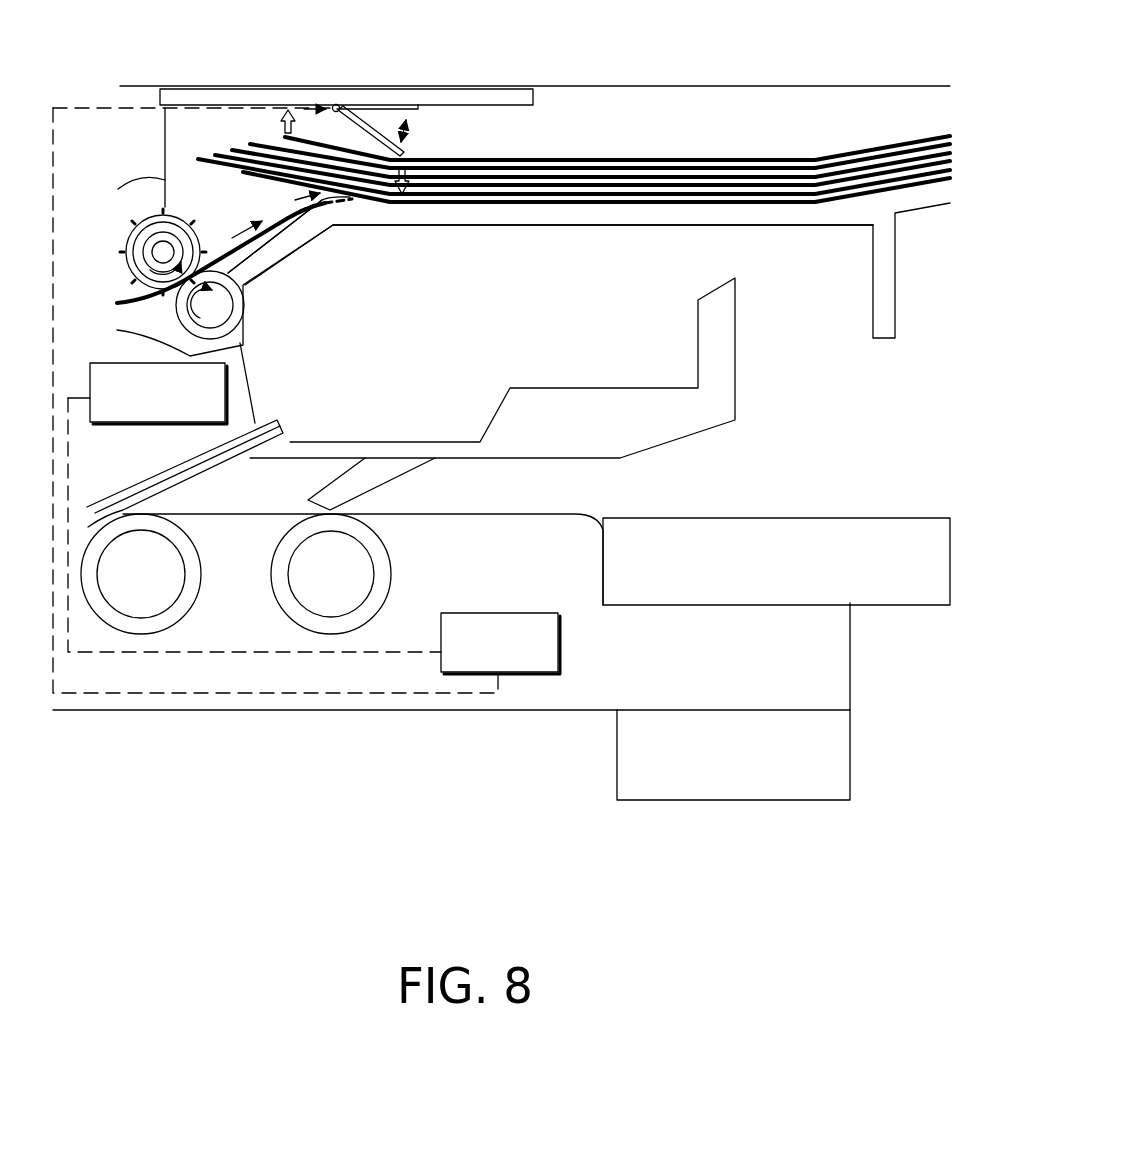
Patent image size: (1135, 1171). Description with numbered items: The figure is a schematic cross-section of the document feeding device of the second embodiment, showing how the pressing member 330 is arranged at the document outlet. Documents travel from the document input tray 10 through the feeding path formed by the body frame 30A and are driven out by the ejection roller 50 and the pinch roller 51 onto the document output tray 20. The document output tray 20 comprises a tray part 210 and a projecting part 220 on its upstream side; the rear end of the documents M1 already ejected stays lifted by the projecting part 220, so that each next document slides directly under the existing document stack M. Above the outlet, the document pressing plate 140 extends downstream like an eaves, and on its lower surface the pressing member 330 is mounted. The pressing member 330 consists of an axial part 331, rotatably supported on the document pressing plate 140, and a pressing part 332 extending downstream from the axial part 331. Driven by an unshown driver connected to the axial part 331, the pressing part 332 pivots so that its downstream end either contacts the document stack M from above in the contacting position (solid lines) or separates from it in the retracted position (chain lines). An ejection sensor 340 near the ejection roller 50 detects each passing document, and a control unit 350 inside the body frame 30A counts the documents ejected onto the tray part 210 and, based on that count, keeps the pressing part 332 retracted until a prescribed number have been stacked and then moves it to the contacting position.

The document pressing plate 140 is at (207, 83).
The axial part 331 is at (335, 105).
The pressing part 332 is at (369, 127).
The pressing member 330 is at (428, 137).
The document stack M is at (820, 138).
The documents already ejected M1 is at (636, 156).
The pinch roller 51 is at (128, 253).
The ejection roller 50 is at (178, 312).
The projecting part 220 is at (305, 196).
The tray part 210 is at (554, 232).
The document output tray 20 is at (786, 256).
The document input tray 10 is at (862, 516).
The body frame 30A is at (440, 750).
The ejection sensor 340 is at (227, 390).
The control unit 350 is at (518, 614).